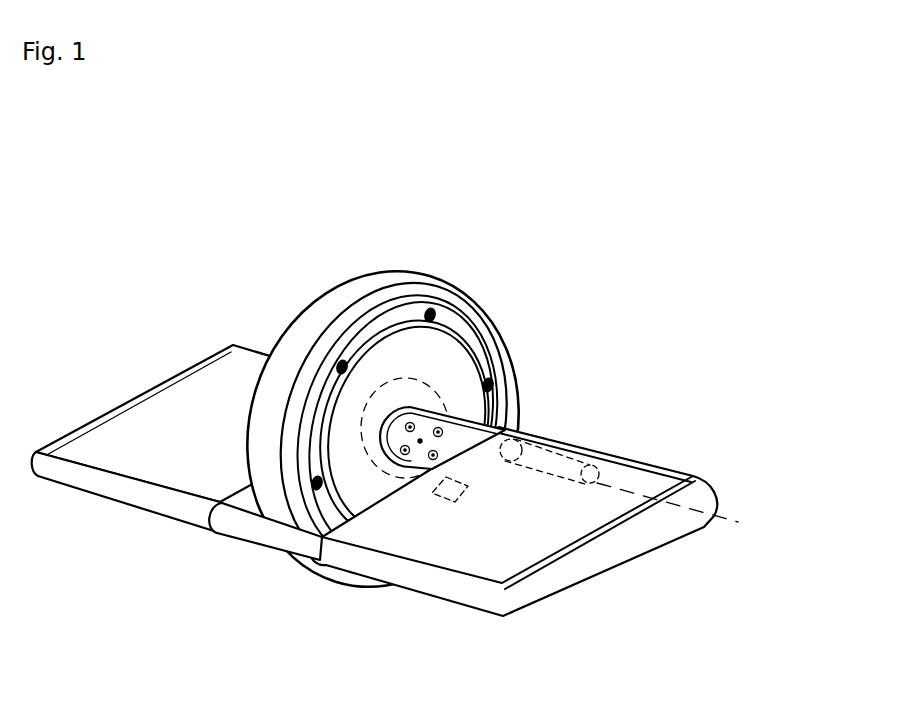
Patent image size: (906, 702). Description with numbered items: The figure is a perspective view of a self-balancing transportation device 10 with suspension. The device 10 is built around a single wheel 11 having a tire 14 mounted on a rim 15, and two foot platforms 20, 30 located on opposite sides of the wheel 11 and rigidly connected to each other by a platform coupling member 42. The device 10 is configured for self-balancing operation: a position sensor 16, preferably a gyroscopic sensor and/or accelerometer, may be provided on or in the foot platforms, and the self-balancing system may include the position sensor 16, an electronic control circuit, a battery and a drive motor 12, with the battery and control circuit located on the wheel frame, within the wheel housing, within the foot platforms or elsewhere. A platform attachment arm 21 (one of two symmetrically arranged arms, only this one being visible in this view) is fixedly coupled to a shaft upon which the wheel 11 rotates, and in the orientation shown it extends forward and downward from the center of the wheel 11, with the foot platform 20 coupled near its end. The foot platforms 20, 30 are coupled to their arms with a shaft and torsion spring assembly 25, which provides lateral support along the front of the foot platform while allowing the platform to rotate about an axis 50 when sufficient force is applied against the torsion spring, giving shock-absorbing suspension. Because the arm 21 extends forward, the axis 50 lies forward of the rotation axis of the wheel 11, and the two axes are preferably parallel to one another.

The self-balancing transportation device 10 is at (587, 219).
The wheel 11 is at (300, 599).
The drive motor 12 is at (442, 380).
The tire 14 is at (383, 268).
The rim 15 is at (462, 333).
The position sensor 16 is at (445, 507).
The foot platform 20 is at (667, 467).
The platform attachment arm 21 is at (470, 415).
The shaft and torsion spring assembly 25 is at (590, 452).
The foot platform 30 is at (148, 390).
The platform coupling member 42 is at (252, 535).
The axis 50 is at (735, 521).